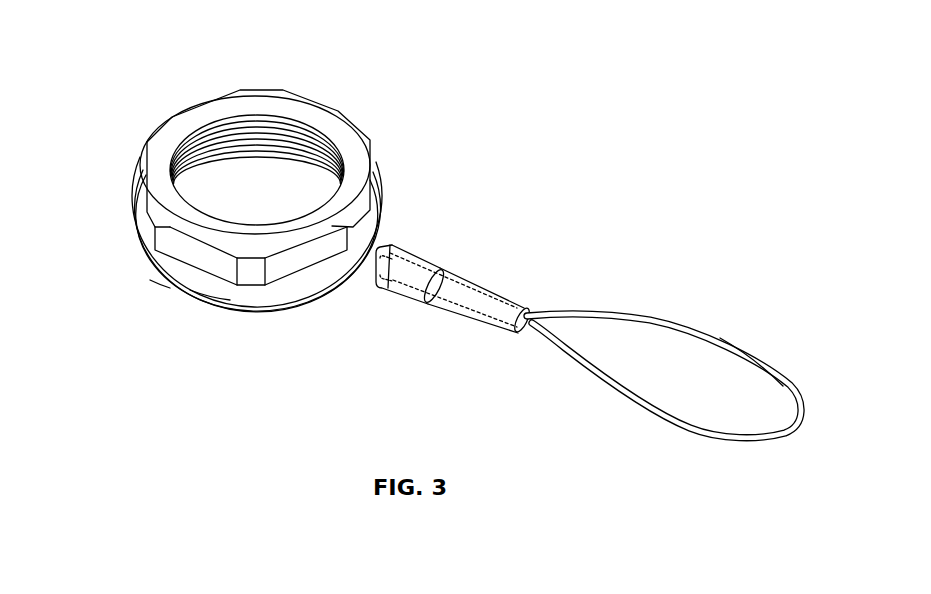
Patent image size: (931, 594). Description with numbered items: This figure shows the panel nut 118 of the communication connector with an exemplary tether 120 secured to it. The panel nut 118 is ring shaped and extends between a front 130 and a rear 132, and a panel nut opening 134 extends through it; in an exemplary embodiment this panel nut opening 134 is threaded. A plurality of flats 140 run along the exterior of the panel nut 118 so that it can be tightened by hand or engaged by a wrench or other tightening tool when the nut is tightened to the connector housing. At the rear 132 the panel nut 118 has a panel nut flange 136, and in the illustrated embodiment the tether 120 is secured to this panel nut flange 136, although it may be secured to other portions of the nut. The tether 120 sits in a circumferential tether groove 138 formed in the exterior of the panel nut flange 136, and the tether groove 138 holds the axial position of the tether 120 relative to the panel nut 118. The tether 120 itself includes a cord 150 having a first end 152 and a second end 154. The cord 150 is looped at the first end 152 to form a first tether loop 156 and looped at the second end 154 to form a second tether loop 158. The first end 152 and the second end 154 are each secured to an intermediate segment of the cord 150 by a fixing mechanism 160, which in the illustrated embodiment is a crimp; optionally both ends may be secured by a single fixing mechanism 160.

The panel nut 118 is at (127, 129).
The tether 120 is at (568, 316).
The front 130 is at (345, 131).
The rear 132 is at (249, 312).
The panel nut opening 134 is at (269, 190).
The panel nut flange 136 is at (188, 292).
The tether groove 138 is at (170, 282).
The flats 140 is at (312, 256).
The cord 150 is at (280, 295).
The first end 152 is at (410, 288).
The second end 154 is at (393, 292).
The first tether loop 156 is at (218, 295).
The second tether loop 158 is at (727, 338).
The fixing mechanism 160 is at (414, 258).